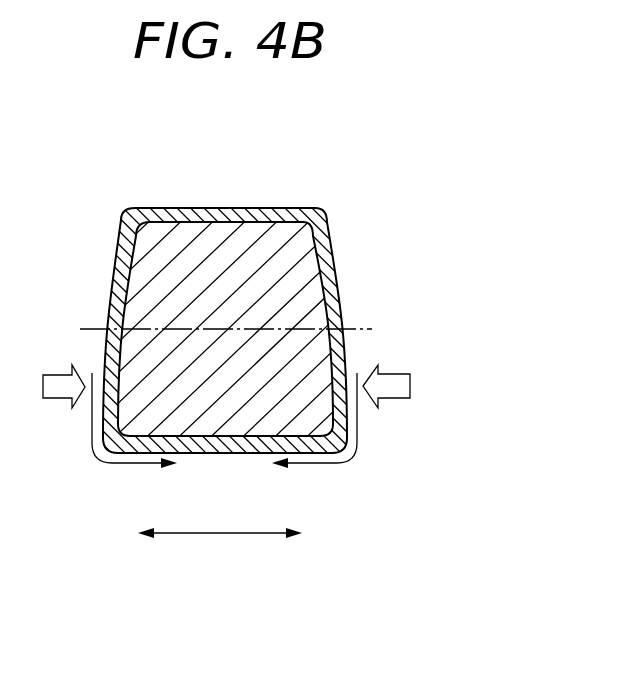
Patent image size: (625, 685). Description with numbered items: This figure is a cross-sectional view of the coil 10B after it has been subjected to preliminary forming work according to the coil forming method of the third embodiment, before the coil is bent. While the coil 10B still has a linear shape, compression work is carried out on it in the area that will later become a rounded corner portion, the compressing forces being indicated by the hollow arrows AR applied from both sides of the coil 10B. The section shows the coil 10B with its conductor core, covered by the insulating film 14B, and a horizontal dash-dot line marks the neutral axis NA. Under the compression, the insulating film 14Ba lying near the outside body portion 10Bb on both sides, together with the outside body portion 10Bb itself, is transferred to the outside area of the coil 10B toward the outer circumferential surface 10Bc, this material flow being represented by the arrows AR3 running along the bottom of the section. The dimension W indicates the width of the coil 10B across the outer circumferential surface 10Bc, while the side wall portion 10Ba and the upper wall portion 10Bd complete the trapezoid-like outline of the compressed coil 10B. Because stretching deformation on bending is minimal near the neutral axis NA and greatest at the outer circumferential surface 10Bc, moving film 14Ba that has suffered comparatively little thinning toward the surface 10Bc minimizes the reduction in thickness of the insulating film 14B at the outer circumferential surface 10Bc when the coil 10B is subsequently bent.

The coil 10B is at (295, 349).
The side wall portion 10Ba is at (318, 214).
The outside body portion 10Bb is at (142, 423).
The outer circumferential surface 10Bc is at (225, 453).
The top wall portion 10Bd is at (207, 208).
The insulating film 14B is at (270, 330).
The insulating film 14Ba is at (335, 421).
The neutral axis NA is at (350, 322).
The pressing direction arrows AR is at (388, 372).
The material flow direction AR3 is at (356, 443).
The width W is at (263, 531).